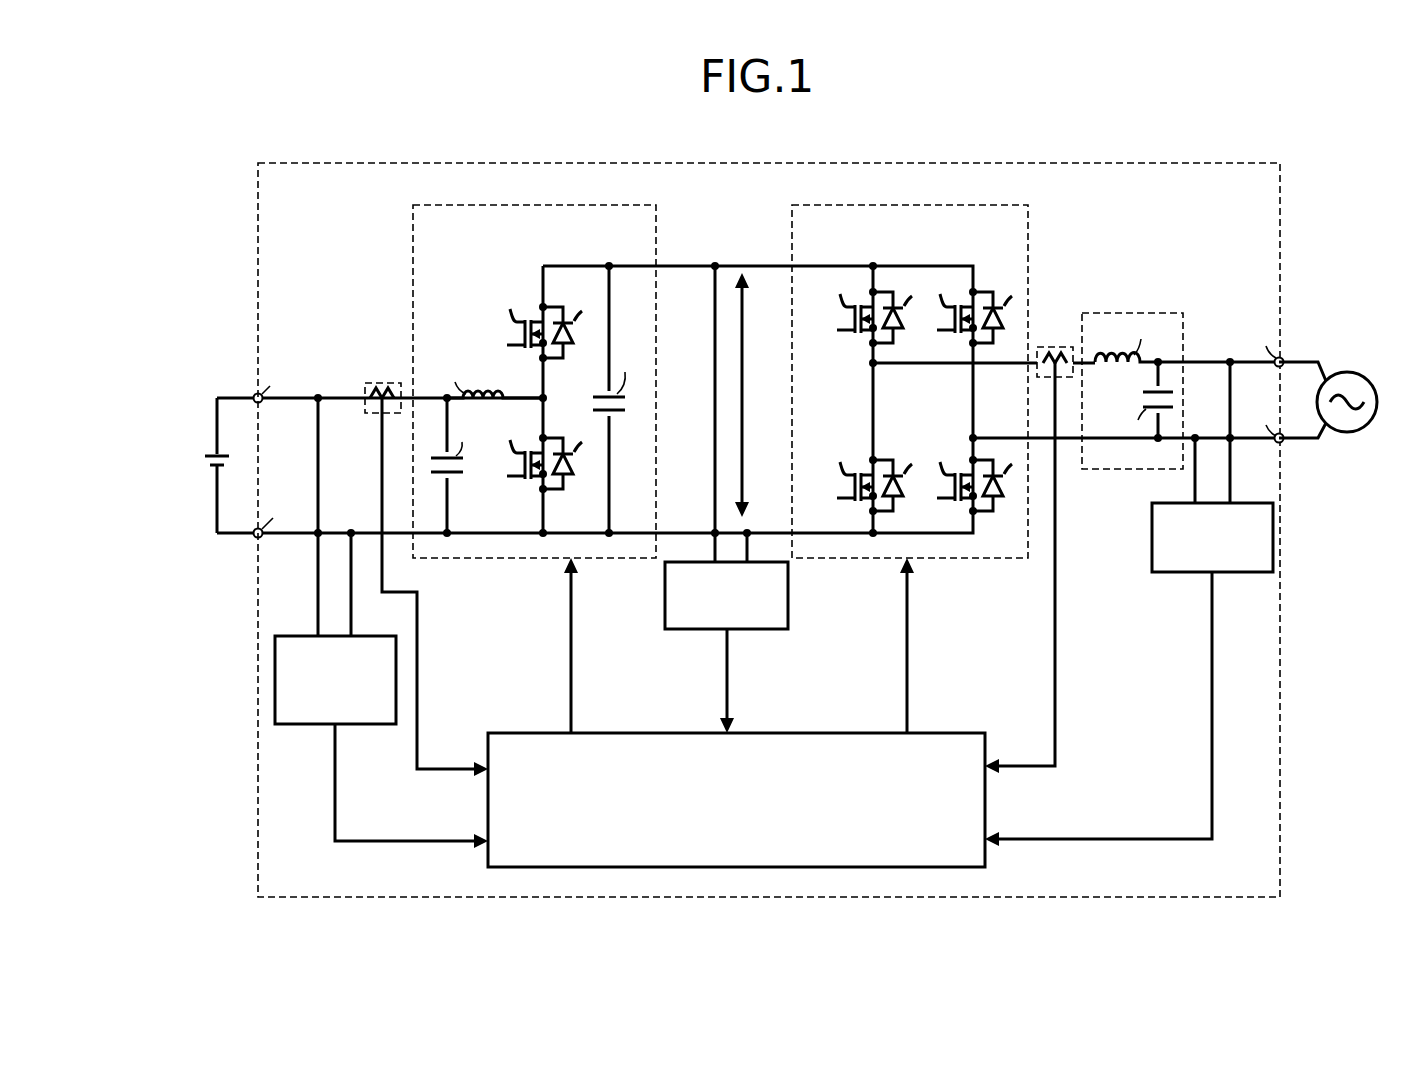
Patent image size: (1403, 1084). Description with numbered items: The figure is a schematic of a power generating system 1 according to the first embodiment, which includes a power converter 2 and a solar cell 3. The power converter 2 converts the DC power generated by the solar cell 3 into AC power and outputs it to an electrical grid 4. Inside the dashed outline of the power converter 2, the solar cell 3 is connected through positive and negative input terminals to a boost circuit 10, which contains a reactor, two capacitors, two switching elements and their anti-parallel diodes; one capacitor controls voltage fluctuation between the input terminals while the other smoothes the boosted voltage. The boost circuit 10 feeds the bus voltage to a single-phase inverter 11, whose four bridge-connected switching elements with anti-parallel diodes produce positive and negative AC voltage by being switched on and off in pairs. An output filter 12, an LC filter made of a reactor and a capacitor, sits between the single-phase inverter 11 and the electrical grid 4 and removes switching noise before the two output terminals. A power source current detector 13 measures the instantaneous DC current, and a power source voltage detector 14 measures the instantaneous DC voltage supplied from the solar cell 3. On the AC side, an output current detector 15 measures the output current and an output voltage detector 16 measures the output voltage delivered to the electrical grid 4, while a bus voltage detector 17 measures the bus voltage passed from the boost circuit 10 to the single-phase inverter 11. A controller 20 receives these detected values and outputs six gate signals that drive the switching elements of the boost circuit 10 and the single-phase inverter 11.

The power generating system 1 is at (190, 242).
The power converter 2 is at (728, 163).
The solar cell 3 is at (222, 452).
The electrical grid 4 is at (1347, 372).
The boost circuit 10 is at (582, 205).
The single-phase inverter 11 is at (938, 205).
The output filter 12 is at (1130, 313).
The power source current detector 13 is at (371, 383).
The power source voltage detector 14 is at (385, 636).
The output current detector 15 is at (1054, 347).
The output voltage detector 16 is at (1248, 503).
The bus voltage detector 17 is at (758, 562).
The controller 20 is at (969, 733).